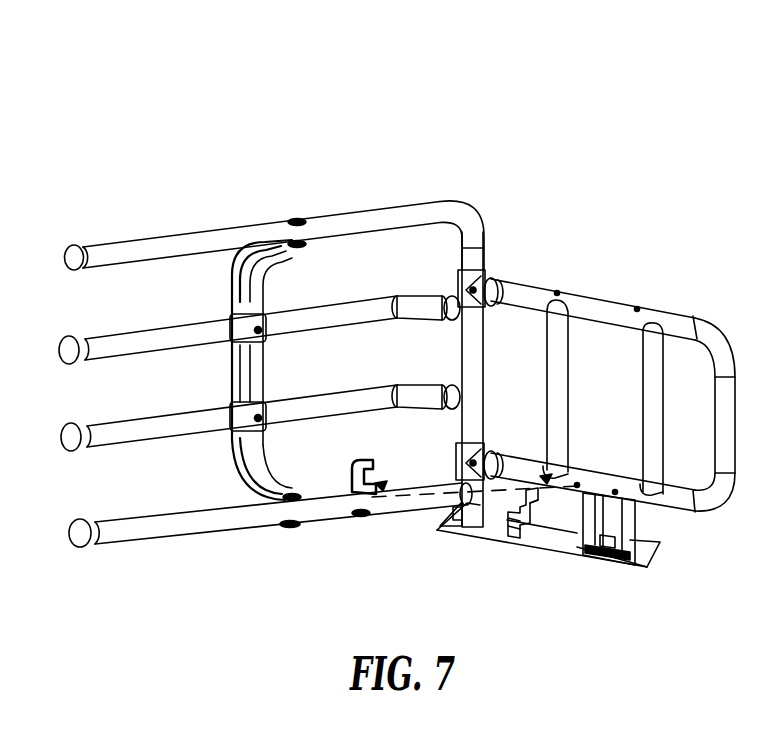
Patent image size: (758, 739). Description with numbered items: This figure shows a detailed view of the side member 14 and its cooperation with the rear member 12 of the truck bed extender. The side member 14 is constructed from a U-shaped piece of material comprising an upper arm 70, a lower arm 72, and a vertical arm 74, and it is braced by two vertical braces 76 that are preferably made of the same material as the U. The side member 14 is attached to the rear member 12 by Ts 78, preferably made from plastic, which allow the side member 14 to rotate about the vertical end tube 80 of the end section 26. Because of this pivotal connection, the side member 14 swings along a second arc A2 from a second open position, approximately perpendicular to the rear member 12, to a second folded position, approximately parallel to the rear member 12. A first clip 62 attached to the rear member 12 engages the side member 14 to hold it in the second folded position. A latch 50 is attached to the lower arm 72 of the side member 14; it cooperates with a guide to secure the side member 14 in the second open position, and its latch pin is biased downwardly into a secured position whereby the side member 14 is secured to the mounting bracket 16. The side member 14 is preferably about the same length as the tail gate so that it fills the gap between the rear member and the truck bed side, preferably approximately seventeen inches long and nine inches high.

The rear member 12 is at (241, 161).
The side member 14 is at (560, 236).
The mounting bracket 16 is at (556, 540).
The end section 26 is at (358, 223).
The latch 50 is at (631, 520).
The first clip 62 is at (350, 474).
The upper arm 70 is at (598, 318).
The lower arm 72 is at (660, 498).
The vertical arm 74 is at (722, 445).
The vertical braces 76 is at (553, 403).
The Ts 78 is at (490, 278).
The vertical end tube 80 is at (462, 353).
The second arc A2 is at (436, 494).